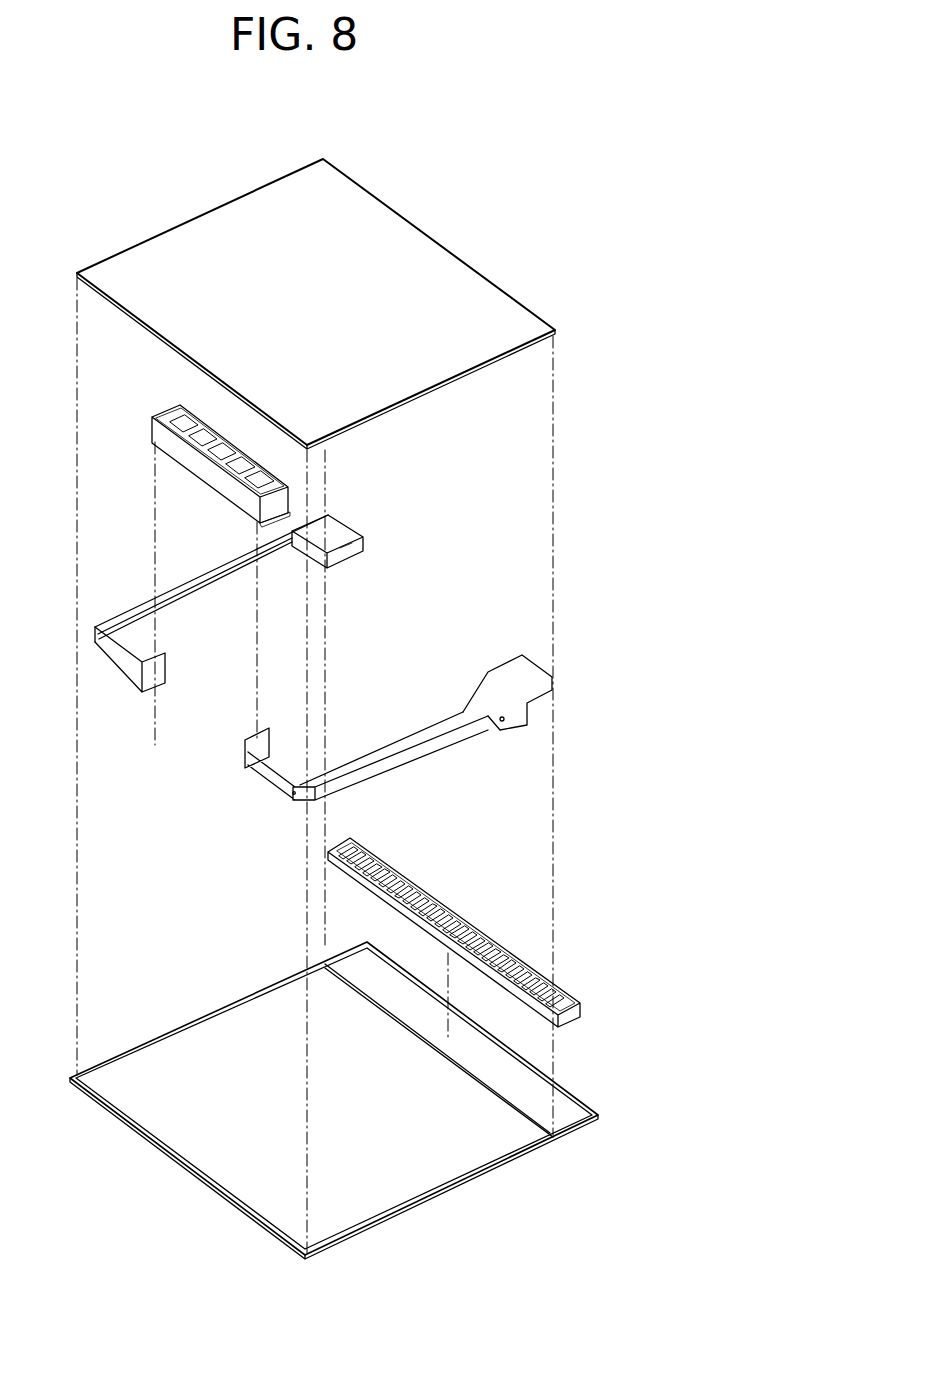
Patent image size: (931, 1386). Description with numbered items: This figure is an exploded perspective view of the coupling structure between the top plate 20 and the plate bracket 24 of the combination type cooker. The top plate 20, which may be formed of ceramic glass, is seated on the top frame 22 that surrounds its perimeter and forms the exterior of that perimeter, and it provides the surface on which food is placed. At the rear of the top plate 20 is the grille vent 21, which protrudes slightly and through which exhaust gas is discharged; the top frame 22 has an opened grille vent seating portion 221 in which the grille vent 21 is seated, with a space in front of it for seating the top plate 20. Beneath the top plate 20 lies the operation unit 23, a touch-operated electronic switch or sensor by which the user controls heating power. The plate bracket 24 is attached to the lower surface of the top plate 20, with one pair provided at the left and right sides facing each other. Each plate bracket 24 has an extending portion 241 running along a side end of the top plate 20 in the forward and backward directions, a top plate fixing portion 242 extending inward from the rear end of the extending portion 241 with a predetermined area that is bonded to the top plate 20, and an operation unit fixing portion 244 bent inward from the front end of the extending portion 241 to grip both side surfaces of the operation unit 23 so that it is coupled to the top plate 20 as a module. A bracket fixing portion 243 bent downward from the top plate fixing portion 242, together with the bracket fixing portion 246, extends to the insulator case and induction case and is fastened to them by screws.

The top plate 20 is at (212, 225).
The grille vent 21 is at (467, 920).
The top frame 22 is at (349, 1100).
The operation unit 23 is at (147, 429).
The plate bracket 24 is at (273, 612).
The extending portion 241 is at (220, 578).
The top plate fixing portion 242 is at (300, 542).
The bracket fixing portion 243 is at (353, 553).
The operation unit fixing portion 244 is at (117, 648).
The bracket fixing portion 246 is at (495, 730).
The grille vent seating portion 221 is at (537, 1087).